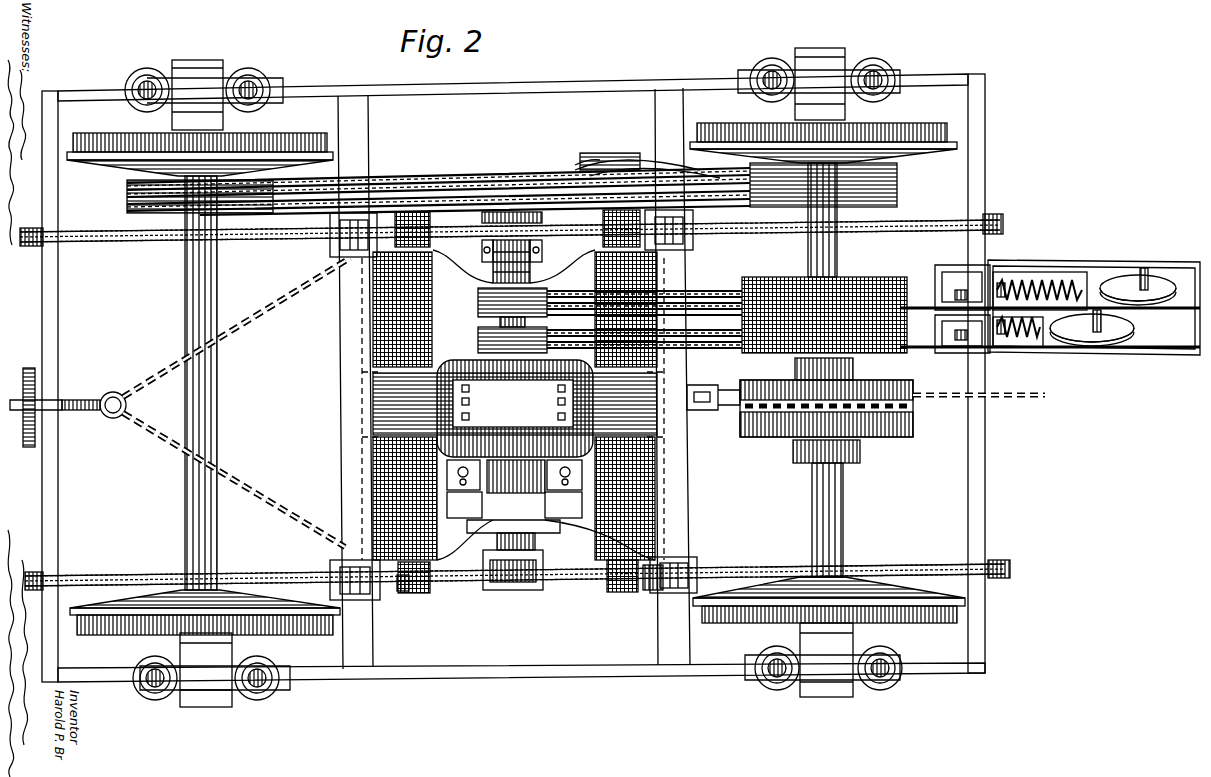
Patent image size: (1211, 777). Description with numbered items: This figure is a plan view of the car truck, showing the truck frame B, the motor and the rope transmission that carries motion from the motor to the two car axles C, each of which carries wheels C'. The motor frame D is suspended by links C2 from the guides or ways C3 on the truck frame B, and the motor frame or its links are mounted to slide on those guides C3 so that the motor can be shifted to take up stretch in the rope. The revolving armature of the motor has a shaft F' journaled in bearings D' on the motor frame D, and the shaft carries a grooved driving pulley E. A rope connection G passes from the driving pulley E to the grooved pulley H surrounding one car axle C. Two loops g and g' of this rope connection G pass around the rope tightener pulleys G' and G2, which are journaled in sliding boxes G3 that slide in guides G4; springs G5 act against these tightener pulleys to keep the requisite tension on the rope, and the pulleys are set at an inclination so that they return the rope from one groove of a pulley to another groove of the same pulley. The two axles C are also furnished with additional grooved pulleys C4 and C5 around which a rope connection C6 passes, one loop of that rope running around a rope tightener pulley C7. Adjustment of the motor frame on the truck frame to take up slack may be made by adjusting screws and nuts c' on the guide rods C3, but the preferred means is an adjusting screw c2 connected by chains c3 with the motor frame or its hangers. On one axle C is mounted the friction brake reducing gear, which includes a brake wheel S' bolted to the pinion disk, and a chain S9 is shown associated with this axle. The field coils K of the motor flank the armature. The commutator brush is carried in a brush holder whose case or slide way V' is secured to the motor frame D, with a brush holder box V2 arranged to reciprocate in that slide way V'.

The truck frame B is at (378, 92).
The car axle C is at (530, 376).
The wheel C' is at (516, 385).
The link C2 is at (420, 595).
The guide C3 is at (443, 233).
The grooved pulley C4 is at (898, 180).
The grooved pulley C5 is at (127, 202).
The rope connection C6 is at (437, 185).
The rope tightener pulley C7 is at (583, 170).
The adjusting nut c' is at (513, 418).
The adjusting screw c2 is at (75, 403).
The chain c3 is at (176, 368).
The motor frame D is at (514, 261).
The bearing D' is at (527, 363).
The grooved driving pulley E is at (478, 296).
The armature shaft F' is at (491, 331).
The rope connection G is at (644, 296).
The rope tightener pulley G' is at (1138, 262).
The rope tightener pulley G2 is at (1107, 333).
The sliding box G3 is at (1098, 278).
The guide G4 is at (1140, 355).
The spring G5 is at (1058, 280).
The rope loop g is at (1039, 260).
The rope loop g' is at (1026, 354).
The grooved pulley H is at (866, 282).
The field coil K is at (370, 330).
The brake wheel S' is at (813, 418).
The sprocket chain S9 is at (913, 388).
The case or slide way V' is at (546, 480).
The brush holder box V2 is at (464, 505).